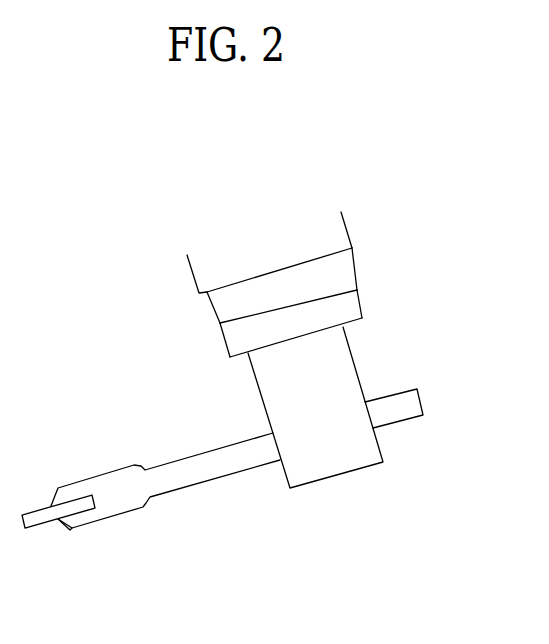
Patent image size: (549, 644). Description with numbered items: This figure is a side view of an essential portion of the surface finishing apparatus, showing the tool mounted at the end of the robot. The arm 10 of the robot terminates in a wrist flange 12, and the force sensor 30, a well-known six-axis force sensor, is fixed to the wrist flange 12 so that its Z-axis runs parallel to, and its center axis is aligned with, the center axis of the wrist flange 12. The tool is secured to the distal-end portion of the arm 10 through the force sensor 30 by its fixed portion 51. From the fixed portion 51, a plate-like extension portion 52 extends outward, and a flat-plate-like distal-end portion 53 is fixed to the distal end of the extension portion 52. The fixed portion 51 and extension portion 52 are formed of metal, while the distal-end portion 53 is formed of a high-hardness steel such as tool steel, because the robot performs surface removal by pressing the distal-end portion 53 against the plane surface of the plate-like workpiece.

The arm 10 is at (347, 220).
The wrist flange 12 is at (348, 267).
The force sensor 30 is at (356, 296).
The fixed portion 51 is at (352, 473).
The extension portion 52 is at (195, 485).
The distal-end portion 53 is at (34, 530).